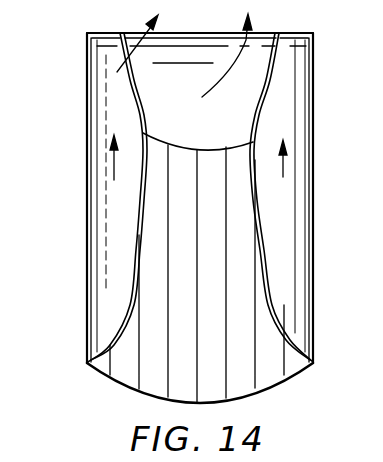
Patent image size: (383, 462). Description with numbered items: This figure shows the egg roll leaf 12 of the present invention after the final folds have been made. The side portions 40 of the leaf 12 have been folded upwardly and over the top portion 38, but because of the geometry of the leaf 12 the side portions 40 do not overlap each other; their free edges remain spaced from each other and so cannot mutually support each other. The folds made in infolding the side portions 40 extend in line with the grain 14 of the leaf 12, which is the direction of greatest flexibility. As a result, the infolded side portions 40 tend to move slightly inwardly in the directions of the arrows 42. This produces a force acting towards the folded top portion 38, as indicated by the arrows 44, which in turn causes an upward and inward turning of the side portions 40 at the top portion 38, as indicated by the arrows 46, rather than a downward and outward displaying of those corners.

The leaf 12 is at (265, 377).
The grain 14 is at (180, 378).
The top portion 38 is at (208, 50).
The side portions 40 is at (295, 208).
The arrows 42 is at (158, 283).
The arrows 44 is at (110, 164).
The arrows 46 is at (123, 64).